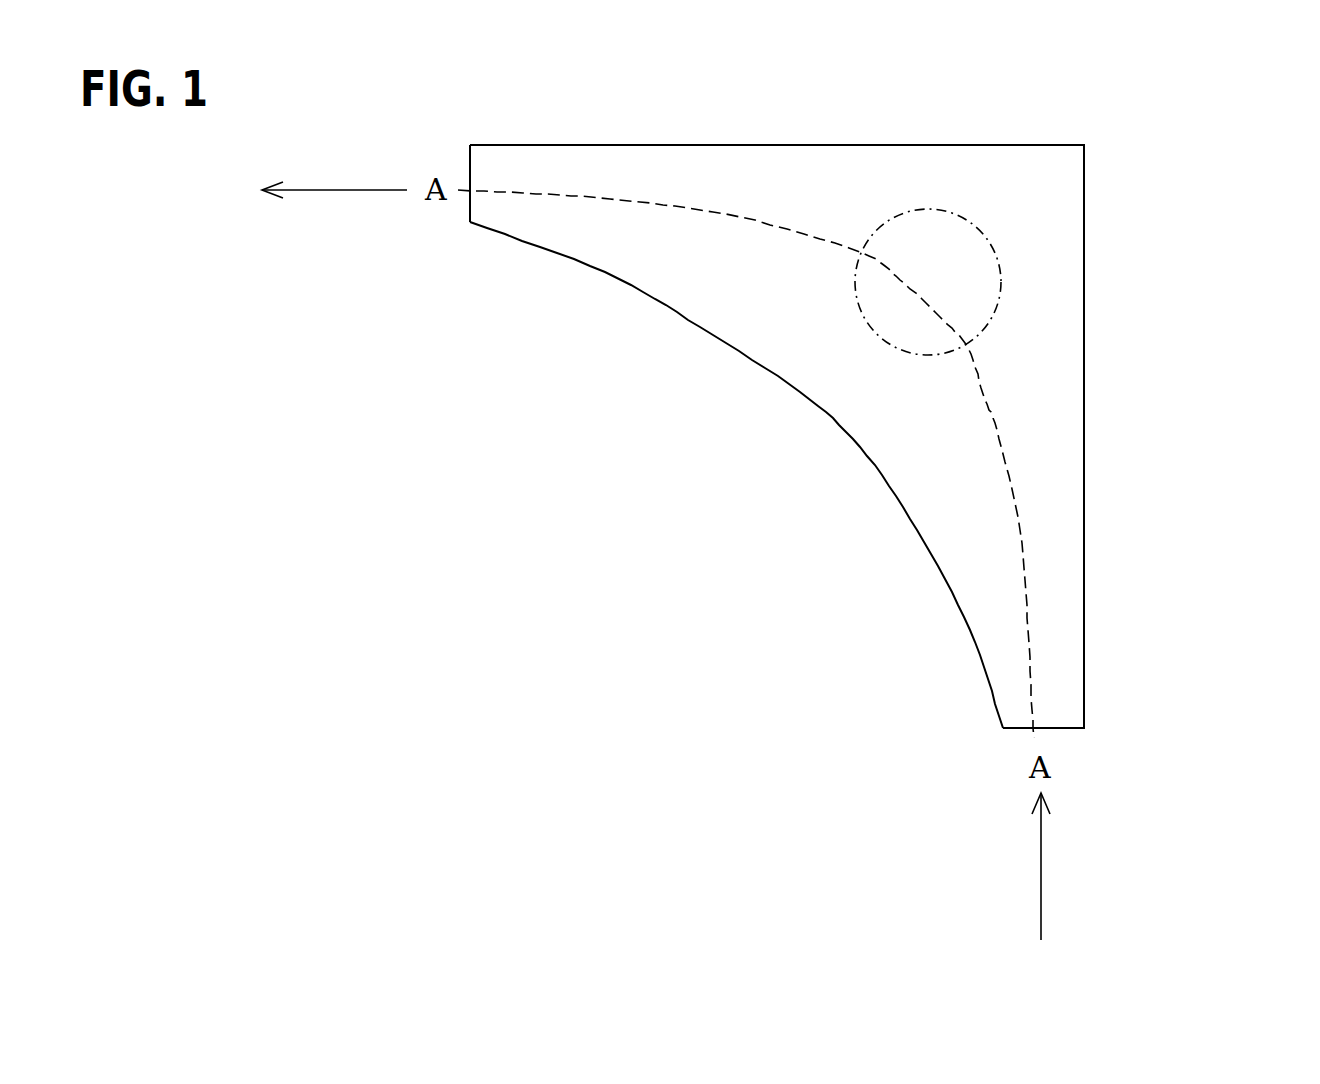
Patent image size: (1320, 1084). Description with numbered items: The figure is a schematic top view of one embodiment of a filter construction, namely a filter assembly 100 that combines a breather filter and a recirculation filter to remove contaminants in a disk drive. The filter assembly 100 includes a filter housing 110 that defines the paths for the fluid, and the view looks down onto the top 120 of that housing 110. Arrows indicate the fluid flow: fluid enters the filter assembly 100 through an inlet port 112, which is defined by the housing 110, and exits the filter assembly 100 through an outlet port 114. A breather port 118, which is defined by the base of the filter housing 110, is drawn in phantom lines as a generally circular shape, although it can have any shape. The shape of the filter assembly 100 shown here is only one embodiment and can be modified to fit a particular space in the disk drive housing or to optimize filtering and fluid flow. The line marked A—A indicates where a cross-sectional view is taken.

The filter assembly 100 is at (787, 514).
The filter housing 110 is at (1088, 423).
The inlet port 112 is at (1019, 733).
The outlet port 114 is at (469, 199).
The breather port 118 is at (996, 256).
The top 120 is at (615, 262).